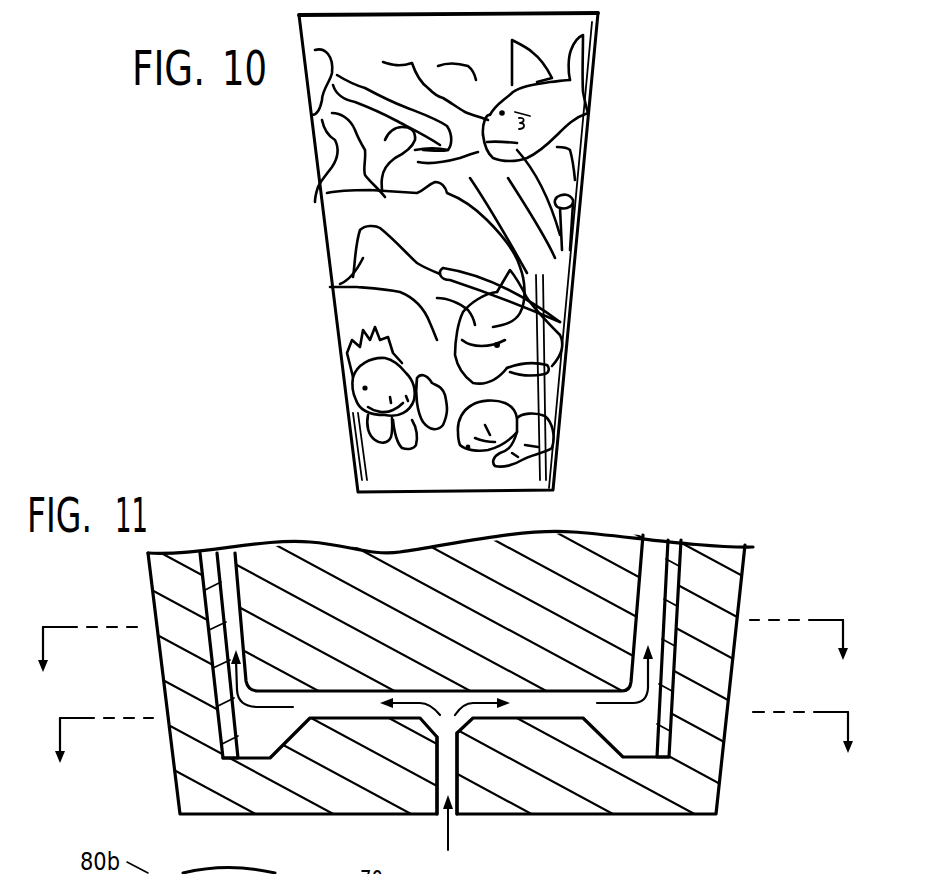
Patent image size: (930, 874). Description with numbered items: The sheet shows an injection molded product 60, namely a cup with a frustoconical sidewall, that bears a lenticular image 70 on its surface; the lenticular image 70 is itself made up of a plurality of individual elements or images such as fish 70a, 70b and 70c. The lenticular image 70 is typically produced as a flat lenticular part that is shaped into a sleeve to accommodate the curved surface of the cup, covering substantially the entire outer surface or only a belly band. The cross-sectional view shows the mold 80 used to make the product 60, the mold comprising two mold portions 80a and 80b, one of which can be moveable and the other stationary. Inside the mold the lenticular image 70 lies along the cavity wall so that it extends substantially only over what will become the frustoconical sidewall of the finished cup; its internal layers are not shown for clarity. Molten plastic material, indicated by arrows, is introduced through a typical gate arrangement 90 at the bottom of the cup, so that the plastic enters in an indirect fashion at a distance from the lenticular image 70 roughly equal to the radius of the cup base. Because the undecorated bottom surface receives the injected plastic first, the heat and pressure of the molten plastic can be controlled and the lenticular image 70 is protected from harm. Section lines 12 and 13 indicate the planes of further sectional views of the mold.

In FIG. 10, the injection molded product 60 is at (740, 65).
In FIG. 10, the lenticular image 70 is at (560, 288).
In FIG. 11, the lenticular image 70 is at (225, 728).
In FIG. 10, the individual element 70a is at (537, 340).
In FIG. 10, the individual element 70b is at (513, 413).
In FIG. 10, the individual element 70c is at (547, 438).
In FIG. 11, the mold 80 is at (757, 501).
In FIG. 11, the mold portion 80a is at (592, 568).
In FIG. 11, the mold portion 80b is at (713, 603).
In FIG. 11, the gate arrangement 90 is at (448, 767).
In FIG. 11, the section line 12- 12 is at (453, 723).
In FIG. 11, the section line 13- 13 is at (444, 631).